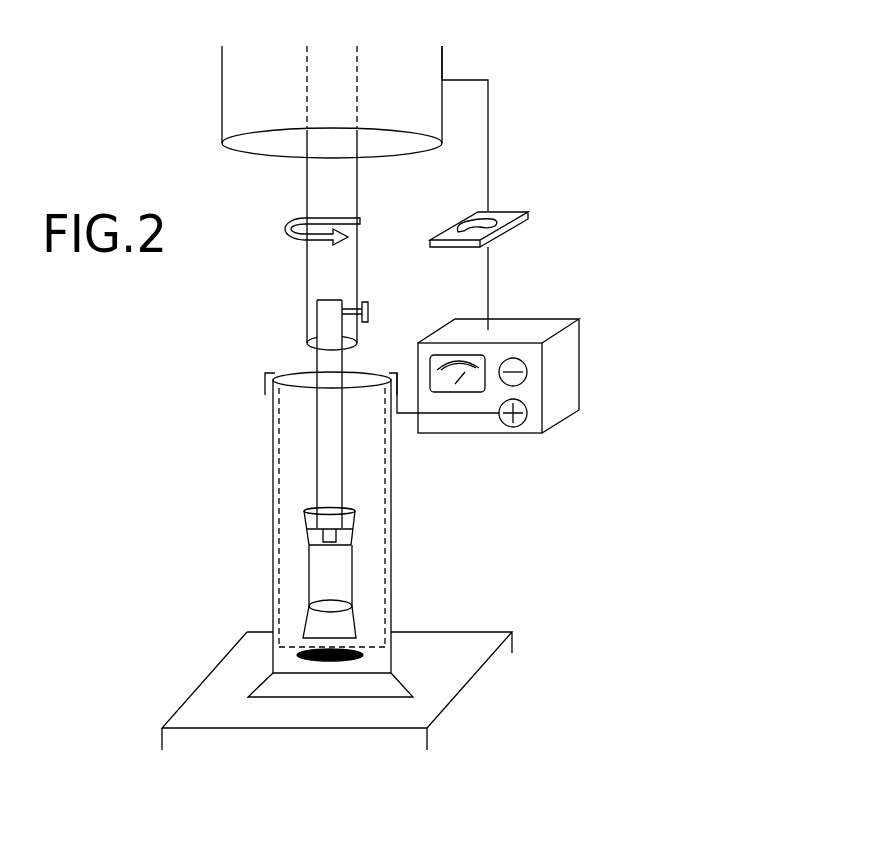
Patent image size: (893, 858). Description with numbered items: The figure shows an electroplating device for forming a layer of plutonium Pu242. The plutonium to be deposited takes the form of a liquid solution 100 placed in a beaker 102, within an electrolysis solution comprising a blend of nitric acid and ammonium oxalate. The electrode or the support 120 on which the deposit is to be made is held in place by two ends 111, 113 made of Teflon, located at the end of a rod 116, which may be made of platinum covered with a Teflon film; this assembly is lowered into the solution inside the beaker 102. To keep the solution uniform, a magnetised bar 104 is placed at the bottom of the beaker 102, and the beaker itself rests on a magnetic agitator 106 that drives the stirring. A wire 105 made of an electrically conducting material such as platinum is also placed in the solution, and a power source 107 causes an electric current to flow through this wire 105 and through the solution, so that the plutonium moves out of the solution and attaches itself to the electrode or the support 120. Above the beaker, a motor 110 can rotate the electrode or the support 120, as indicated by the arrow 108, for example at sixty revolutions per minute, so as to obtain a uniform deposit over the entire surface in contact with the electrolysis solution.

The liquid solution 100 is at (287, 533).
The beaker 102 is at (370, 420).
The magnetised bar 104 is at (363, 655).
The wire 105 is at (274, 374).
The magnetic agitator 106 is at (412, 738).
The power source 107 is at (558, 408).
The arrow 108 is at (292, 223).
The motor 110 is at (352, 73).
The end 111 is at (347, 507).
The end 113 is at (335, 623).
The rod 116 is at (325, 445).
The electrode or support 120 is at (333, 580).